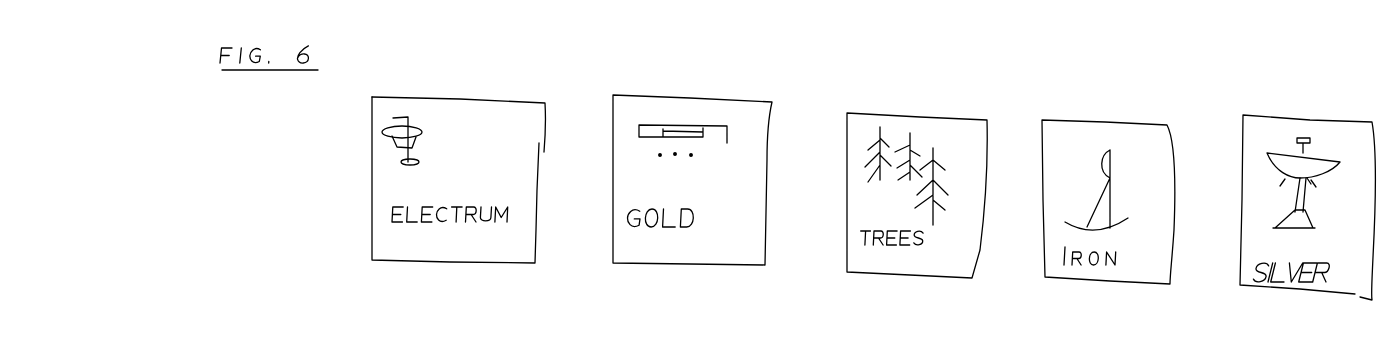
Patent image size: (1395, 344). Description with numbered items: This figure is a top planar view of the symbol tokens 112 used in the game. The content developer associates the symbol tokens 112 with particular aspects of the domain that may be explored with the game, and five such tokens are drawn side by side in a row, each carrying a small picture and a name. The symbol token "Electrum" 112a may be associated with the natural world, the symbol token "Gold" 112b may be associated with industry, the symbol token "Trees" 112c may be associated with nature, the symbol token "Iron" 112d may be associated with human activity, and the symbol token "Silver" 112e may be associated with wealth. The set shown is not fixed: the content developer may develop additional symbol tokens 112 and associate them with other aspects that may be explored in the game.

The symbol tokens 112 is at (407, 60).
The symbol token "Electrum" 112a is at (372, 172).
The symbol token "Gold" 112b is at (613, 243).
The symbol token "Trees" 112c is at (847, 248).
The symbol token "Iron" 112d is at (1045, 260).
The symbol token "Silver" 112e is at (1240, 268).